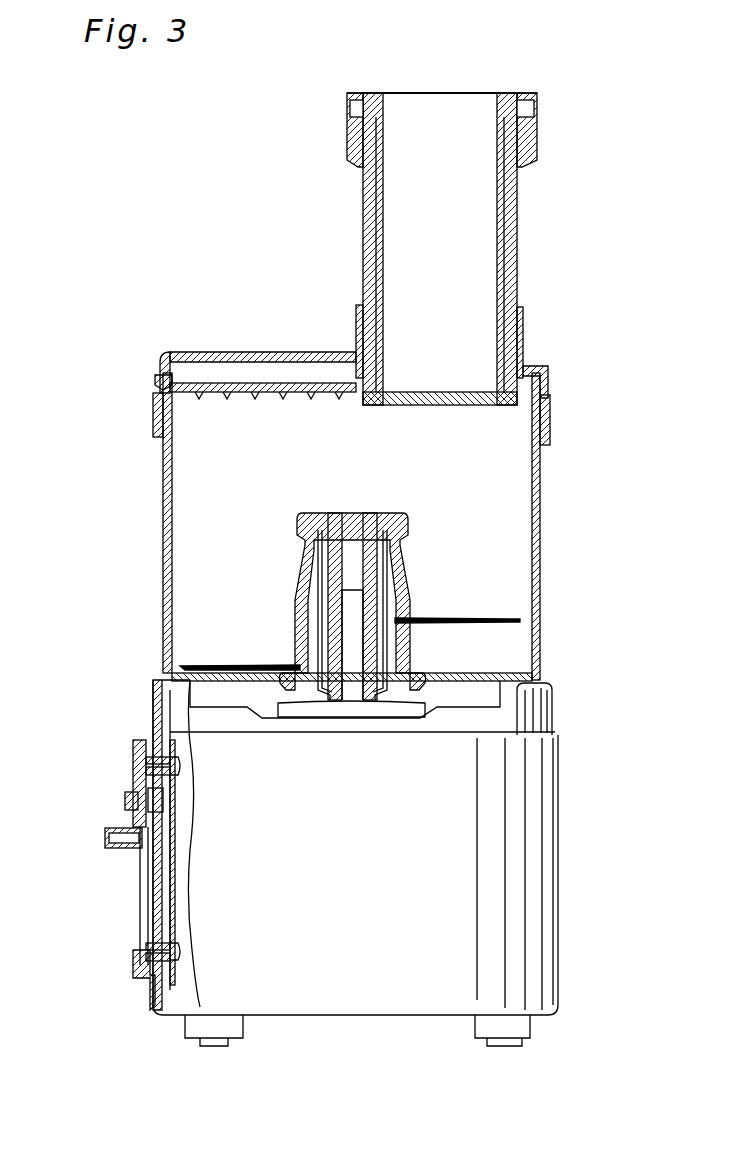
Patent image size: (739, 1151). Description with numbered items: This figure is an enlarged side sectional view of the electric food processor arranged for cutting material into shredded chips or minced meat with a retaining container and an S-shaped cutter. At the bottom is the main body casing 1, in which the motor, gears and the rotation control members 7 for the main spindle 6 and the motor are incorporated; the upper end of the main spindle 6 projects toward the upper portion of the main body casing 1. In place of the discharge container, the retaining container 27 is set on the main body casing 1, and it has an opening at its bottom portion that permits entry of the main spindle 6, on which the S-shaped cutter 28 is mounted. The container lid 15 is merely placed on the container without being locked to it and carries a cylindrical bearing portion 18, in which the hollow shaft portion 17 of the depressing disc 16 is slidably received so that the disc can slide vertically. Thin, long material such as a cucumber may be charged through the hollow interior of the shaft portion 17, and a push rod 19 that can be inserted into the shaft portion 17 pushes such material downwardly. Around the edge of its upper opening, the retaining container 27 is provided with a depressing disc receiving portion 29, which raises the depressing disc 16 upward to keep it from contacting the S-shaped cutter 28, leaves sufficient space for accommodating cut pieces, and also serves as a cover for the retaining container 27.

The main body casing 1 is at (537, 805).
The main spindle 6 is at (355, 662).
The rotation control members 7 is at (172, 877).
The container lid 15 is at (210, 355).
The depressing disc 16 is at (295, 385).
The hollow shaft portion 17 is at (365, 215).
The cylindrical bearing portion 18 is at (357, 330).
The push rod 19 is at (352, 110).
The retaining container 27 is at (165, 495).
The S-shaped cutter 28 is at (300, 608).
The depressing disc receiving portion 29 is at (165, 378).